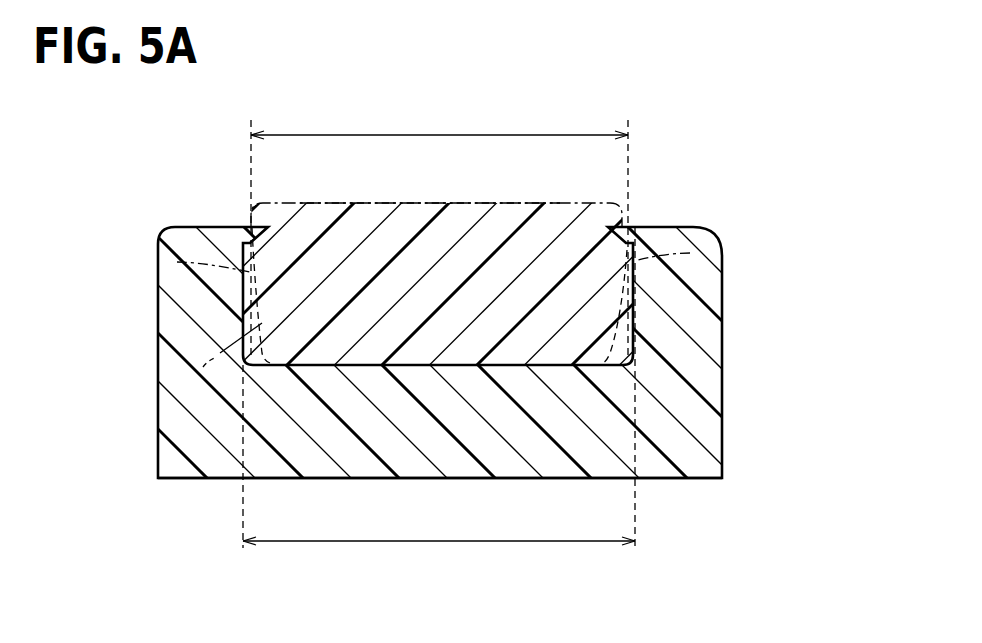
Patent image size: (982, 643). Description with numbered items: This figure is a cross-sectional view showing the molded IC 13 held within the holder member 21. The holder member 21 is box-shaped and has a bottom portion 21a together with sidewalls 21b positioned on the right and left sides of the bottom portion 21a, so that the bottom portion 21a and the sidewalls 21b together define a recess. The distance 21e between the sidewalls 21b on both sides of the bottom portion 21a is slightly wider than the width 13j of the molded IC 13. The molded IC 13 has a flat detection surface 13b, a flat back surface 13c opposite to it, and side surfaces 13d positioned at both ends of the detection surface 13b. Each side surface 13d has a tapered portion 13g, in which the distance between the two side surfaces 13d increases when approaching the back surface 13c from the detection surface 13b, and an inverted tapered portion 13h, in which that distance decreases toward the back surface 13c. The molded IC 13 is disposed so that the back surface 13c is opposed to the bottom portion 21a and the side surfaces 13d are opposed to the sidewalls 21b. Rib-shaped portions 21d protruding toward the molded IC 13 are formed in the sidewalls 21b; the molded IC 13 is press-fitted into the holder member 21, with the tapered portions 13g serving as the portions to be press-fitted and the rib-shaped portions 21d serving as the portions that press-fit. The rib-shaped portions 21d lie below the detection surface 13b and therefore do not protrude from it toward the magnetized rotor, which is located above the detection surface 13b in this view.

The molded IC 13 is at (550, 263).
The detection surface 13b is at (435, 203).
The back surface 13c is at (387, 367).
The side surface 13d is at (177, 262).
The tapered portion 13g is at (247, 215).
The inverted tapered portion 13h is at (203, 367).
The width of the molded IC 13j is at (340, 136).
The holder member 21 is at (727, 325).
The bottom portion 21a is at (500, 447).
The sidewall 21b is at (180, 317).
The rib-shaped portion 21d is at (252, 213).
The distance between the sidewalls 21e is at (543, 541).